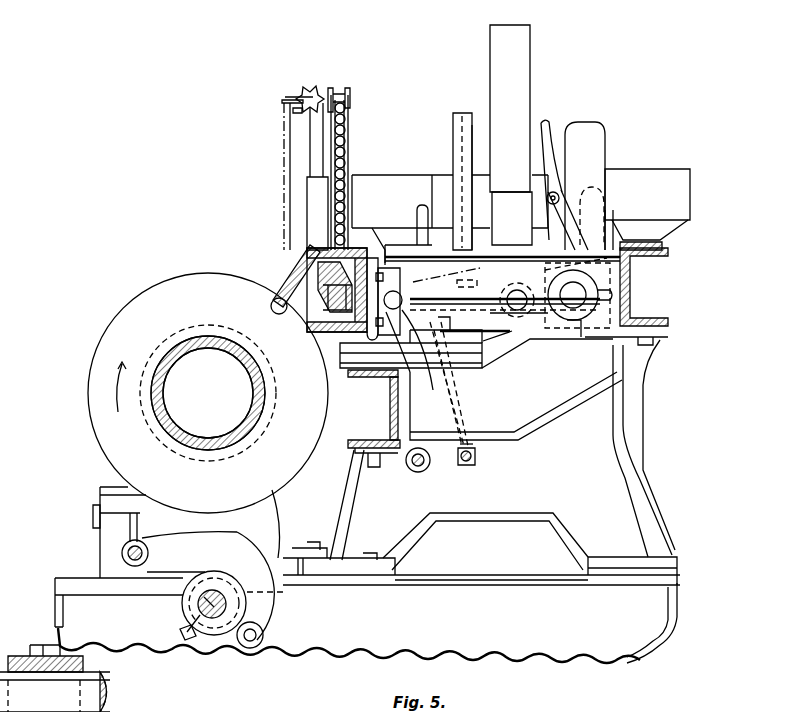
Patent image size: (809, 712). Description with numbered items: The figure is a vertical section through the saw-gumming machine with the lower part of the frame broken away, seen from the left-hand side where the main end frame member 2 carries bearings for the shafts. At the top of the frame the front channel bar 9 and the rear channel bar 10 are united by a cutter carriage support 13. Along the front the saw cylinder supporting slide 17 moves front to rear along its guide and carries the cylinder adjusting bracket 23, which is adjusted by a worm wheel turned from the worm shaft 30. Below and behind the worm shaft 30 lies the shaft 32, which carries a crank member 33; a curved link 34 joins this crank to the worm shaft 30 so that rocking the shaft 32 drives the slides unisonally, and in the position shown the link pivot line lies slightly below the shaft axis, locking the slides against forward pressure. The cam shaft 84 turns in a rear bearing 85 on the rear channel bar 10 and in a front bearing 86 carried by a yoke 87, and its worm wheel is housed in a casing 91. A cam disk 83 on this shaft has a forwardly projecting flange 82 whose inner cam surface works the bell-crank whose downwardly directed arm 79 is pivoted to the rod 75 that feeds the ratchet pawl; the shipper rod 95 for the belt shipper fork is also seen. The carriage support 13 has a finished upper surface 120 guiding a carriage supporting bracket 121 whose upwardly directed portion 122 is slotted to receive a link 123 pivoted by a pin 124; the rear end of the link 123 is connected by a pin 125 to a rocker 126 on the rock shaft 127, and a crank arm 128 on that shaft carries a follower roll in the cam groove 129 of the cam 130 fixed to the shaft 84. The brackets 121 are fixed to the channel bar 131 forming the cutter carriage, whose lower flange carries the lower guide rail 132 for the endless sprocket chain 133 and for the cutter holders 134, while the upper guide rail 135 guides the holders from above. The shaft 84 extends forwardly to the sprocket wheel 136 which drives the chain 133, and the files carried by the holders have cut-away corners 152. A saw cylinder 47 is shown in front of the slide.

The end frame member 2 is at (78, 603).
The front channel bar 9 is at (389, 412).
The rear channel bar 10 is at (634, 286).
The cutter carriage support 13 is at (546, 417).
The saw cylinder supporting slide 17 is at (106, 551).
The cylinder adjusting bracket 23 is at (98, 497).
The worm shaft 30 is at (126, 556).
The shaft 32 is at (203, 604).
The crank member 33 is at (238, 640).
The curved link 34 is at (212, 586).
The wheel 47 is at (78, 382).
The rod 75 is at (467, 468).
The downwardly directed arm 79 is at (470, 395).
The forwardly projecting flange 82 is at (450, 120).
The cam disk 83 is at (472, 124).
The shaft 84 is at (305, 190).
The rear bearing 85 is at (652, 170).
The front bearing 86 is at (390, 180).
The yoke 87 is at (572, 247).
The casing 91 is at (527, 29).
The shipper rod 95 is at (410, 467).
The finished upper surface 120 is at (372, 363).
The carriage supporting bracket 121 is at (472, 330).
The upwardly directed portion 122 is at (414, 362).
The link 123 is at (480, 272).
The pin 124 is at (393, 291).
The pin 125 is at (522, 312).
The rocker 126 is at (528, 307).
The rock shaft 127 is at (578, 297).
The crank arm 128 is at (567, 184).
The cam groove 129 is at (558, 124).
The cam 130 is at (612, 118).
The channel bar 131 is at (382, 251).
The lower guide rail 132 is at (340, 330).
The endless sprocket chain 133 is at (304, 258).
The cutter holder 134 is at (280, 314).
The upper guide rail 135 is at (307, 266).
The sprocket wheel 136 is at (331, 137).
The cut-away corners 152 is at (272, 105).